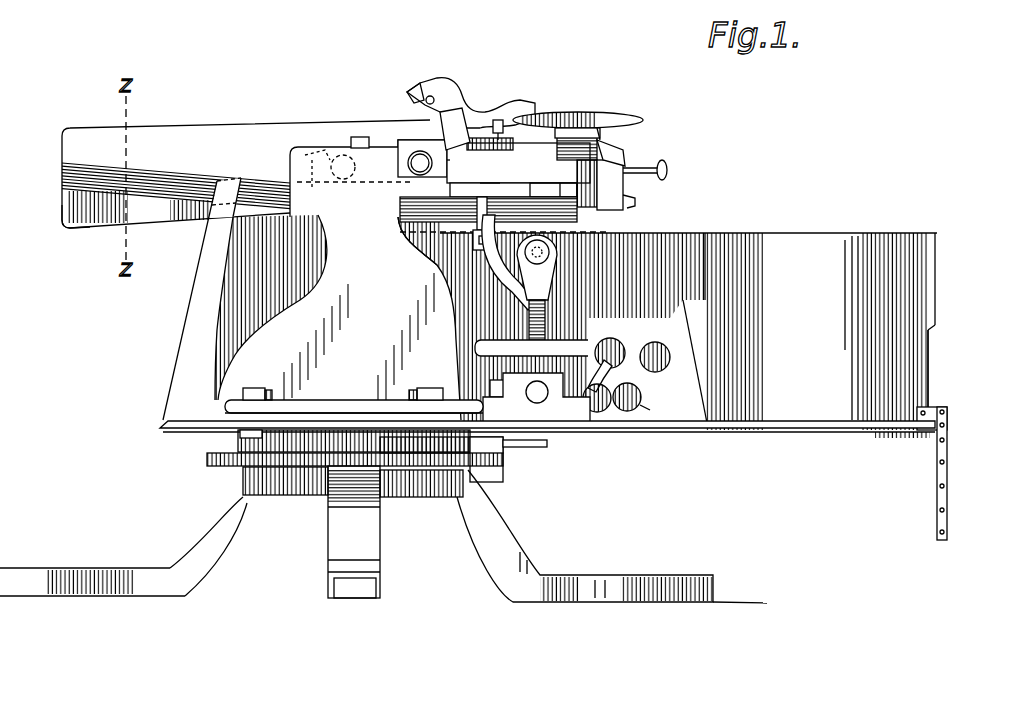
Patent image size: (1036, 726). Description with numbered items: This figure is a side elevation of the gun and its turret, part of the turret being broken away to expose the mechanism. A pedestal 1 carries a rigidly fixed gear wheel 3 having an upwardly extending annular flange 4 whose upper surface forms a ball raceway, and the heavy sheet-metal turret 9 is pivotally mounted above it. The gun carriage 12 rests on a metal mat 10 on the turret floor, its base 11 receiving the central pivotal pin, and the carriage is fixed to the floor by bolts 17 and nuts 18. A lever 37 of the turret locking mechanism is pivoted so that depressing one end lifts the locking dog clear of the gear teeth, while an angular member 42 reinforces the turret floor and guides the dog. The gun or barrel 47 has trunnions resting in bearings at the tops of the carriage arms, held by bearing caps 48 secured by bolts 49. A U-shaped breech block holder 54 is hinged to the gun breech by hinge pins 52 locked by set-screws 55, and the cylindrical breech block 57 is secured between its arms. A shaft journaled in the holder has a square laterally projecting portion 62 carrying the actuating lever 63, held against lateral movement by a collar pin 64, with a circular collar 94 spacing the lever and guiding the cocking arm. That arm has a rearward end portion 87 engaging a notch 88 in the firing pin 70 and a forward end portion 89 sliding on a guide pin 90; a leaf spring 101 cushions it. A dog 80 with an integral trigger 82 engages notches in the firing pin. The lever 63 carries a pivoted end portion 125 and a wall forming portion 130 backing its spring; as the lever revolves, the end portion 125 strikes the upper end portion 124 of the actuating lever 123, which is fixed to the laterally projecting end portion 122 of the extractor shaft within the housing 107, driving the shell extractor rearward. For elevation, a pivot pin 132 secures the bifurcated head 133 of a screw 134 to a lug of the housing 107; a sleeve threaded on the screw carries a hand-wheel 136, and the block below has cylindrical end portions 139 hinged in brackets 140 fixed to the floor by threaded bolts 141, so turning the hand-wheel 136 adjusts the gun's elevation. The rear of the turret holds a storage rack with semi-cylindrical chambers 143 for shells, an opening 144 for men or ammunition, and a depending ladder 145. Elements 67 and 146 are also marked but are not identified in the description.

The pedestal 1 is at (500, 526).
The gear wheel 3 is at (245, 467).
The annular flange 4 is at (235, 444).
The turret 9 is at (820, 331).
The metal mat 10 is at (340, 418).
The carriage base 11 is at (310, 407).
The gun carriage 12 is at (338, 280).
The bolts 17 is at (256, 386).
The nuts 18 is at (277, 390).
The lever 37 is at (620, 355).
The angular member 42 is at (657, 333).
The gun 47 is at (237, 130).
The bearing caps 48 is at (370, 138).
The bolts 49 is at (352, 137).
The hinge pins 52 is at (413, 170).
The breech block holder 54 is at (600, 143).
The set-screws 55 is at (459, 171).
The breech block 57 is at (563, 192).
The laterally projecting portion 62 is at (548, 113).
The actuating lever 63 is at (628, 122).
The collar pin 64 is at (502, 127).
The lever 67 is at (458, 128).
The firing pin 70 is at (668, 172).
The dog 80 is at (622, 178).
The trigger 82 is at (630, 200).
The rearward end portion 87 is at (622, 161).
The notch 88 is at (640, 167).
The forward end portion 89 is at (498, 160).
The guide pin 90 is at (490, 174).
The circular collar 94 is at (497, 118).
The leaf spring 101 is at (557, 190).
The housing 107 is at (433, 245).
The laterally projecting end portion 122 is at (472, 240).
The actuating lever 123 is at (495, 278).
The upper end portion 124 is at (472, 213).
The end portion 125 is at (418, 88).
The wall forming portion 130 is at (452, 86).
The pivot pin 132 is at (549, 250).
The bifurcated head 133 is at (555, 270).
The screw 134 is at (545, 320).
The hand-wheel 136 is at (478, 350).
The end portions 139 is at (535, 394).
The hinge brackets 140 is at (520, 410).
The threaded bolts 141 is at (612, 390).
The semi-cylindrical chambers 143 is at (650, 404).
The opening 144 is at (930, 352).
The ladder 145 is at (944, 494).
The arm end 146 is at (72, 226).